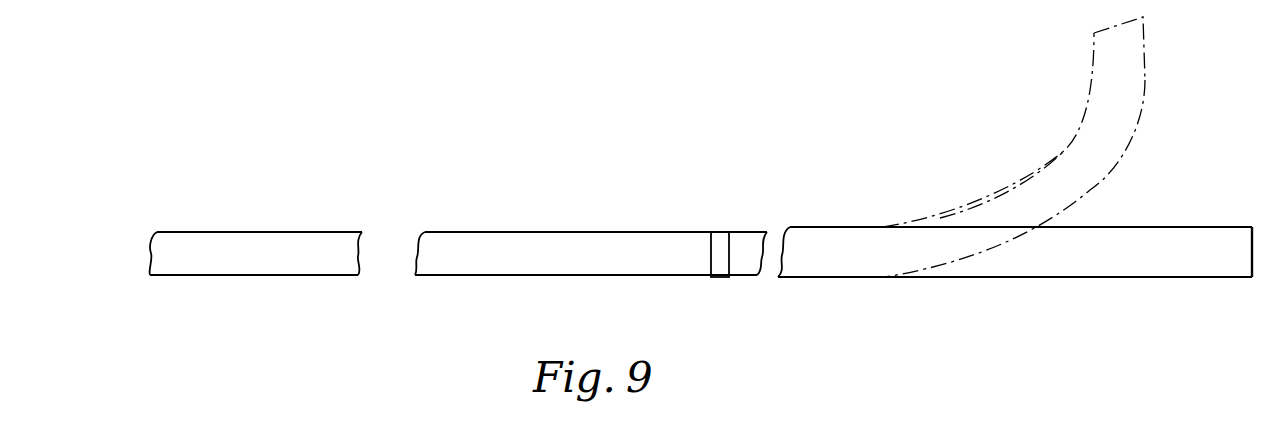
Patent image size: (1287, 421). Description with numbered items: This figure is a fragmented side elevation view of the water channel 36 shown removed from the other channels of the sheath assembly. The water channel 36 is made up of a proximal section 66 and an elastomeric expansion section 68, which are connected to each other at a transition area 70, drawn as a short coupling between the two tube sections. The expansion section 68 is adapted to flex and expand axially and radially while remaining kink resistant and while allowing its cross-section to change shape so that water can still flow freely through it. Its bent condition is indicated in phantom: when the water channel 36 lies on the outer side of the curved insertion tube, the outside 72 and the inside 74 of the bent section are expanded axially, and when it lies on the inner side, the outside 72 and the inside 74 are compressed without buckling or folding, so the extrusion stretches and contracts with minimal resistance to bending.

The water channel 36 is at (597, 225).
The proximal section 66 is at (480, 233).
The expansion section 68 is at (815, 238).
The transition area 70 is at (717, 236).
The outside of the bent section 72 is at (1131, 143).
The inside of the bent section 74 is at (1067, 141).